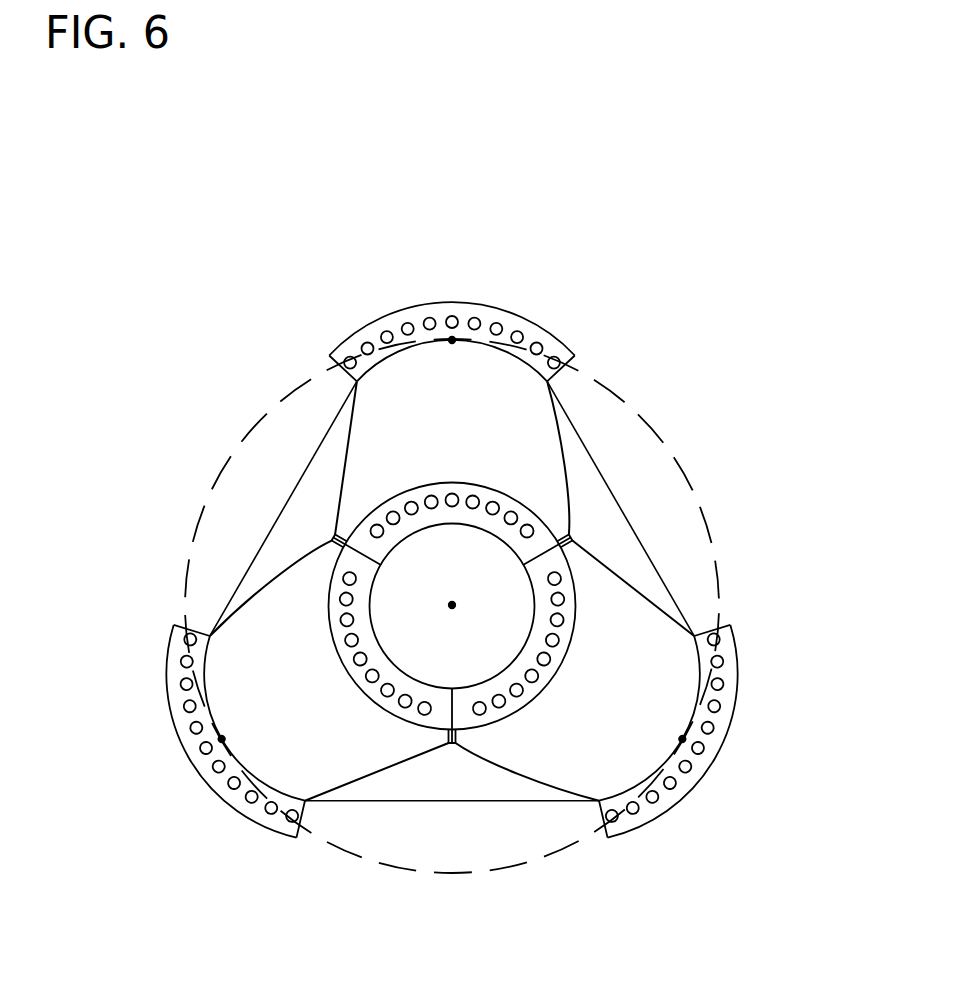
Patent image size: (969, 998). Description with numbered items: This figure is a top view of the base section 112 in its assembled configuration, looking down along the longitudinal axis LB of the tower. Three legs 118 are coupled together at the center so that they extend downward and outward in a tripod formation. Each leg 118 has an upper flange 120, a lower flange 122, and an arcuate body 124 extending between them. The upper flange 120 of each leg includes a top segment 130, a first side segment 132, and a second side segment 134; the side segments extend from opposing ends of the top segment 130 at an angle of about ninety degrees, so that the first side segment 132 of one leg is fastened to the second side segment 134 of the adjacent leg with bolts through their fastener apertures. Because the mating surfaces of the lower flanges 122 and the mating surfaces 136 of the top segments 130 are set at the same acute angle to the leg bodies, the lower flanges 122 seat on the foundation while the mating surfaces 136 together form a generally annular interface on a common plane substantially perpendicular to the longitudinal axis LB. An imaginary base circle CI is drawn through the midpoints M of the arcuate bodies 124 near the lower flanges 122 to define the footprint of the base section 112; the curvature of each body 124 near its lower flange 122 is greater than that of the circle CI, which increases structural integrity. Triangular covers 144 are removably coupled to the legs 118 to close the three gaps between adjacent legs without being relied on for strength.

The base section 112 is at (435, 535).
The leg 118 is at (528, 288).
The upper flange 120 is at (509, 476).
The lower flange 122 is at (407, 305).
The body 124 is at (372, 413).
The top segment 130 is at (470, 463).
The first side segment 132 is at (566, 497).
The second side segment 134 is at (334, 532).
The mating surface 136 is at (450, 521).
The cover 144 is at (285, 535).
The midpoint M is at (452, 338).
The longitudinal axis LB is at (453, 605).
The imaginary base circle CI is at (684, 472).